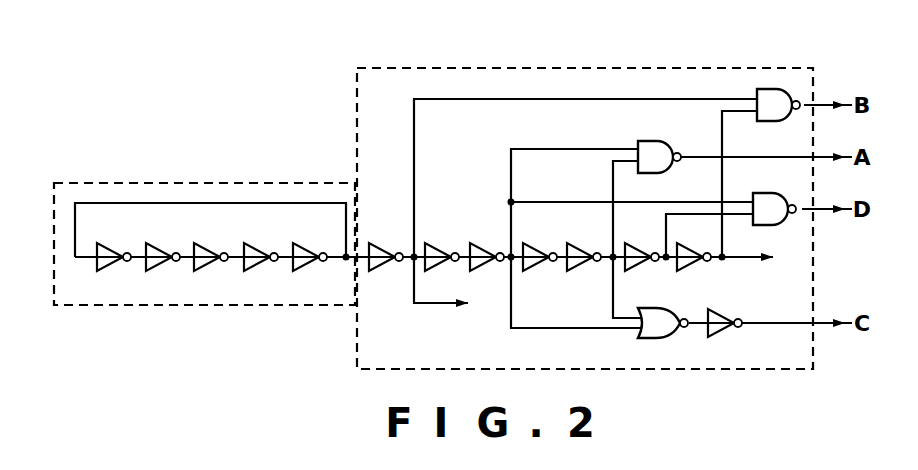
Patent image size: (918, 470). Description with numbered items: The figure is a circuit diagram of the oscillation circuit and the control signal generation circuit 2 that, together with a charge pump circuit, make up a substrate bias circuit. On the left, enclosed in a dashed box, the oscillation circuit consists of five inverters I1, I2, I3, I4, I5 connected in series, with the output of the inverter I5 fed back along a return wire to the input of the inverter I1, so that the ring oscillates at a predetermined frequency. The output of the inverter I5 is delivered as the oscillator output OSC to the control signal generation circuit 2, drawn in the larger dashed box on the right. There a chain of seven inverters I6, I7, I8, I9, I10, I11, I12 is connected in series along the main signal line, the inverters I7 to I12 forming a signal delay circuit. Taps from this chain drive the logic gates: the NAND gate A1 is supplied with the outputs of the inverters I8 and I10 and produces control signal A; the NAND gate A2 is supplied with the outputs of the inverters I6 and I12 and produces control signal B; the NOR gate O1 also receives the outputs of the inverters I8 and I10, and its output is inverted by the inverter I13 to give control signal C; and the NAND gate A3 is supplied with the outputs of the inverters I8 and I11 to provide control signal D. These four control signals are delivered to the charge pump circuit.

The control signal generation circuit 2 is at (648, 67).
The inverter I1 is at (107, 243).
The inverter I2 is at (156, 243).
The inverter I3 is at (206, 243).
The inverter I4 is at (256, 243).
The inverter I5 is at (305, 243).
The inverter I6 is at (381, 243).
The inverter I7 is at (436, 243).
The inverter I8 is at (481, 243).
The inverter I9 is at (536, 243).
The inverter I10 is at (582, 243).
The inverter I11 is at (636, 243).
The inverter I12 is at (688, 243).
The inverter I13 is at (720, 337).
The NAND gate A1 is at (656, 141).
The NAND gate A2 is at (757, 91).
The NAND gate A3 is at (769, 193).
The NOR gate O1 is at (656, 338).